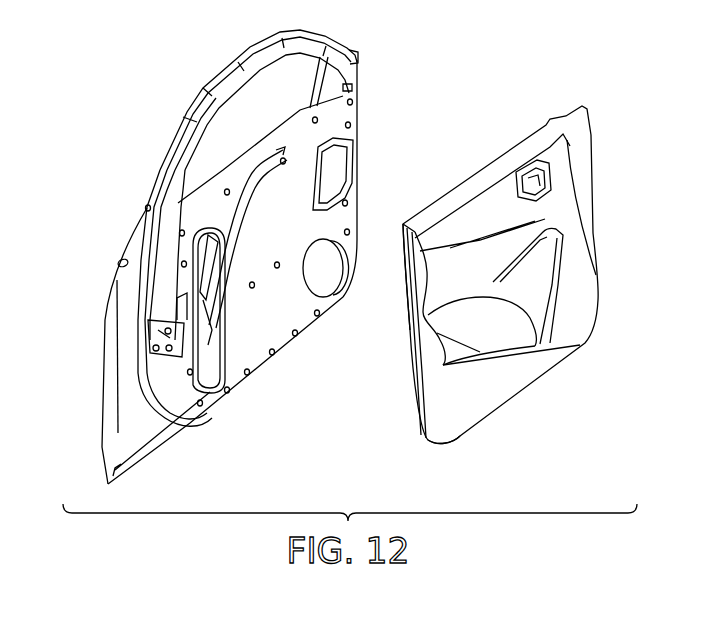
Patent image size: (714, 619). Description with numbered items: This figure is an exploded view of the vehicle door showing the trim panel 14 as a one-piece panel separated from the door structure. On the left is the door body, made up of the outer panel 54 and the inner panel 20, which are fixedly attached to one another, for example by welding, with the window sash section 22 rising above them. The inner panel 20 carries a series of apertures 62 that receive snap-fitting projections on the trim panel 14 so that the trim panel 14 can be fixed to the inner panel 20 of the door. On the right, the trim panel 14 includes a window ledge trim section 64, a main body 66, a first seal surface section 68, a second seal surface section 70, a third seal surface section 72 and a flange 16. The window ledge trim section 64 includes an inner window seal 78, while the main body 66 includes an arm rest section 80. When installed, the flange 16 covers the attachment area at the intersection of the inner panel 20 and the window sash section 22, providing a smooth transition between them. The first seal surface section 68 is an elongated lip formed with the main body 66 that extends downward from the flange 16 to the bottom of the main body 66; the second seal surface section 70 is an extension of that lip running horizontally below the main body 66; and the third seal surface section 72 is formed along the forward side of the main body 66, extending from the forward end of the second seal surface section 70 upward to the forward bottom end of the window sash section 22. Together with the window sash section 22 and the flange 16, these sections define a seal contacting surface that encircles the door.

The trim panel 14 is at (513, 377).
The flange 16 is at (403, 253).
The inner panel 20 is at (330, 217).
The window sash section 22 is at (242, 58).
The outer panel 54 is at (103, 335).
The apertures 62 is at (350, 125).
The window ledge trim section 64 is at (463, 207).
The main body 66 is at (552, 212).
The first seal surface section 68 is at (413, 381).
The second seal surface section 70 is at (455, 438).
The third seal surface section 72 is at (580, 239).
The inner window seal 78 is at (400, 232).
The arm rest section 80 is at (470, 335).